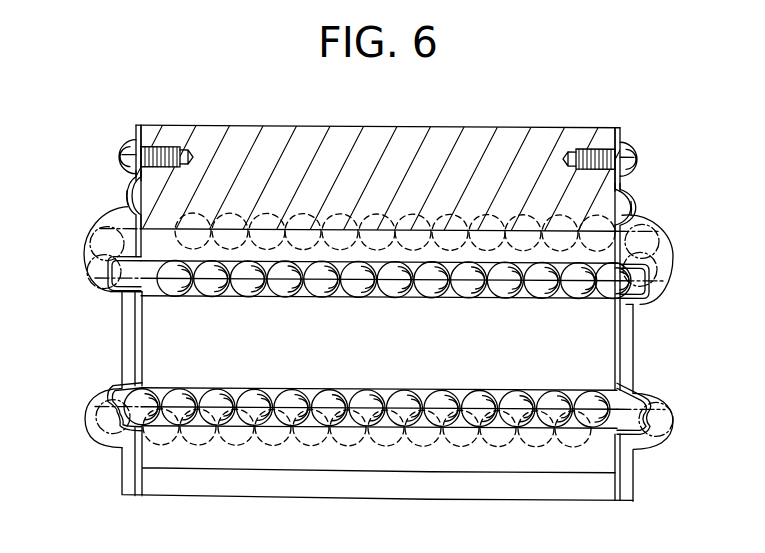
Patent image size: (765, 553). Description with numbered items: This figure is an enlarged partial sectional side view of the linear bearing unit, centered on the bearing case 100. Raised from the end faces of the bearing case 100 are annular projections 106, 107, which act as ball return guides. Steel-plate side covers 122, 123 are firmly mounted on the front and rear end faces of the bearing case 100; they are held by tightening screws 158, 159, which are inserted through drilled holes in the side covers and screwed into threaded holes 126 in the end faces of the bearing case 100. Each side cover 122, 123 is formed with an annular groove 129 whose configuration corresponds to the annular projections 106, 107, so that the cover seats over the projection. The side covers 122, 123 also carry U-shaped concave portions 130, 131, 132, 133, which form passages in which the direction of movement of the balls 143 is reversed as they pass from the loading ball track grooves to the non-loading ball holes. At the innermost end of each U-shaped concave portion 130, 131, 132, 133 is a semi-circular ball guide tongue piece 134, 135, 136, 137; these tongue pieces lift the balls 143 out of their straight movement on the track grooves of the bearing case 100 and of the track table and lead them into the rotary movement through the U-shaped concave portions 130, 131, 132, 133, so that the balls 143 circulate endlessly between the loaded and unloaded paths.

The bearing case 100 is at (491, 116).
The annular projection 106 is at (127, 204).
The annular projection 107 is at (633, 203).
The side cover 122 is at (136, 184).
The side cover 123 is at (626, 190).
The threaded hole 126 is at (158, 148).
The annular groove 129 is at (134, 196).
The U-shaped concave portion 130 is at (674, 255).
The U-shaped concave portion 131 is at (86, 250).
The U-shaped concave portion 132 is at (674, 412).
The U-shaped concave portion 133 is at (88, 426).
The semi-circular ball guide tongue piece 134 is at (118, 291).
The semi-circular ball guide tongue piece 135 is at (640, 300).
The semi-circular ball guide tongue piece 136 is at (102, 392).
The semi-circular ball guide tongue piece 137 is at (660, 396).
The balls 143 is at (174, 299).
The tightening screw 158 is at (128, 143).
The tightening screw 159 is at (634, 144).